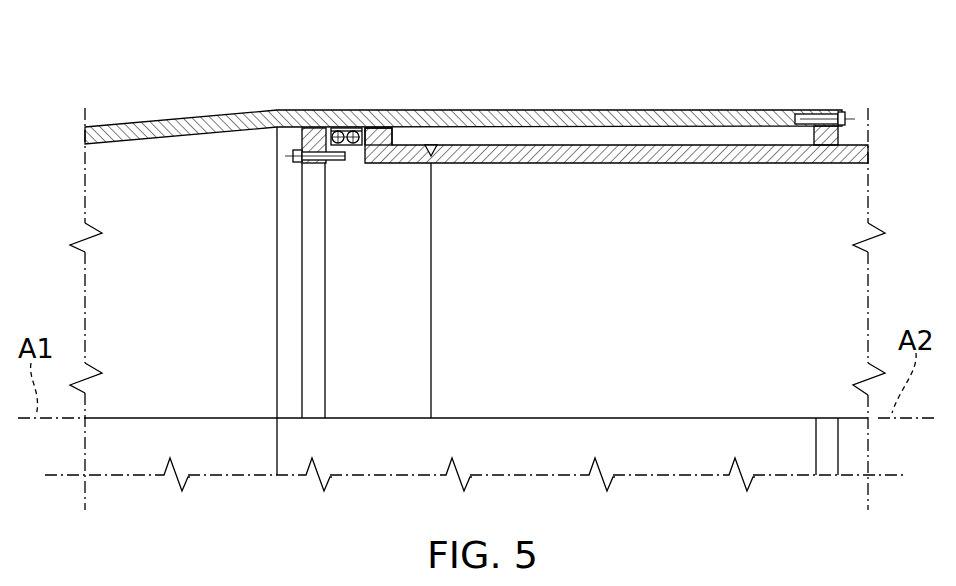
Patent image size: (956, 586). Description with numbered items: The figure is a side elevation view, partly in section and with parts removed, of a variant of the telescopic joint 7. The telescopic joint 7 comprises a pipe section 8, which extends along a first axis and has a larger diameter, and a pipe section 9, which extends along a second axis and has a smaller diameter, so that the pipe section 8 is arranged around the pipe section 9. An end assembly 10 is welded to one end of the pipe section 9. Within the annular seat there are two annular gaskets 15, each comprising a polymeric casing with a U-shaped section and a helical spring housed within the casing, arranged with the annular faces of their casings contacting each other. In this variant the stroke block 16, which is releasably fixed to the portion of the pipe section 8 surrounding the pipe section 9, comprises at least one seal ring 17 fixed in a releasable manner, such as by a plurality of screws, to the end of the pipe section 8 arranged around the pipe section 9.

The telescopic joint 7 is at (508, 152).
The pipe section 8 is at (634, 112).
The pipe section 9 is at (678, 161).
The end assembly 10 is at (382, 171).
The annular gasket 15 is at (340, 129).
The stroke block 16 is at (828, 89).
The seal ring 17 is at (838, 133).